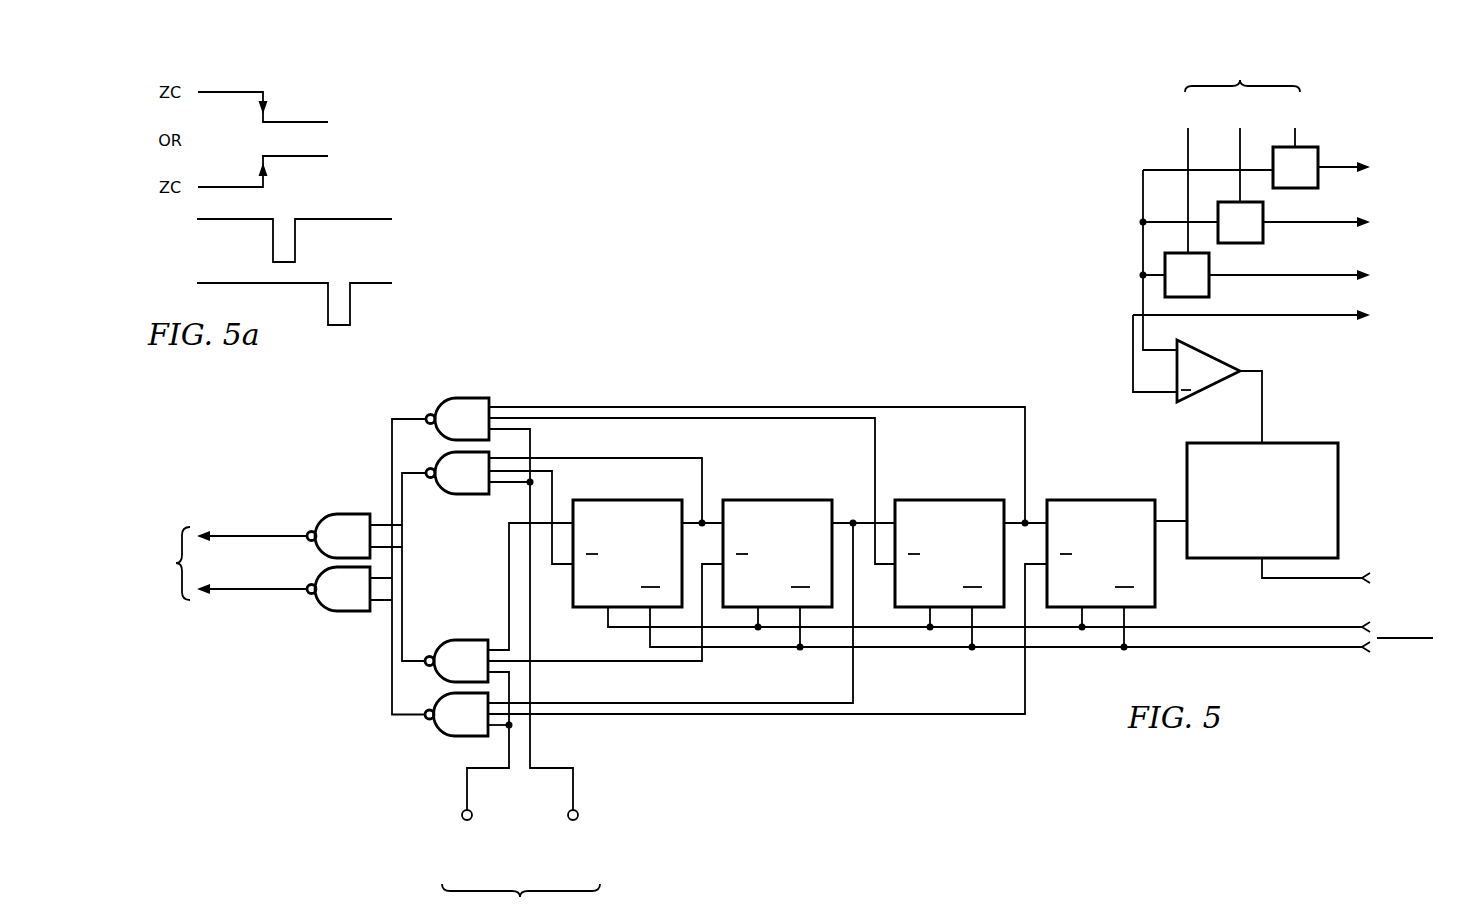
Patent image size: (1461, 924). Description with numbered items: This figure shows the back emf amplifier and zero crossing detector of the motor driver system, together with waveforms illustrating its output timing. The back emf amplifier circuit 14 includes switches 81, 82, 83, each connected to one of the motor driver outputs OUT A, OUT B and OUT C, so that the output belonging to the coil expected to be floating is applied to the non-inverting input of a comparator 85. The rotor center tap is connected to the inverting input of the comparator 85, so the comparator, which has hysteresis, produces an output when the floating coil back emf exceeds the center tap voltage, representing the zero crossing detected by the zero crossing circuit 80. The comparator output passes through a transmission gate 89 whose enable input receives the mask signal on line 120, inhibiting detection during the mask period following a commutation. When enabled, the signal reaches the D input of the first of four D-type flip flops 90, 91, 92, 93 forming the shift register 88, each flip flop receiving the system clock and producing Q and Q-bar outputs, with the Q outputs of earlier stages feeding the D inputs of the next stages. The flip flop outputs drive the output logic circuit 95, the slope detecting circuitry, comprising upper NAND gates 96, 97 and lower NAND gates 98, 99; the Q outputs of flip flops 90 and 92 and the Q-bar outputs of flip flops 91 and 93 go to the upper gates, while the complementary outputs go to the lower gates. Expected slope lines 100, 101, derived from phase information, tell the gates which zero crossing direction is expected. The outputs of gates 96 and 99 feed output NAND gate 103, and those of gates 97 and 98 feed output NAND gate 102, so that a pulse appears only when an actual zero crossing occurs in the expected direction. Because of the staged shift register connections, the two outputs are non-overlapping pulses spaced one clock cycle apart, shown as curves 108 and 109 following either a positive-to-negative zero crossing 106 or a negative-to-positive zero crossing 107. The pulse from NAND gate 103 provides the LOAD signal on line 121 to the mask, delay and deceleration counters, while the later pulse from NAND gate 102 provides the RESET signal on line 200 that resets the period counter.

In FIG. 5, the back emf amplifier circuit 14 is at (1113, 298).
In FIG. 5, the zero crossing circuit 80 is at (886, 208).
In FIG. 5, the switch 81 is at (1319, 178).
In FIG. 5, the switch 82 is at (1264, 233).
In FIG. 5, the switch 83 is at (1210, 288).
In FIG. 5, the comparator 85 is at (1234, 362).
In FIG. 5, the shift register 88 is at (1066, 445).
In FIG. 5, the transmission gate 89 is at (1293, 442).
In FIG. 5, the D-type flip flop 90 is at (1102, 499).
In FIG. 5, the D-type flip flop 91 is at (950, 499).
In FIG. 5, the D-type flip flop 92 is at (780, 499).
In FIG. 5, the D-type flip flop 93 is at (628, 499).
In FIG. 5, the output logic circuit 95 is at (476, 326).
In FIG. 5, the upper NAND gate 96 is at (465, 397).
In FIG. 5, the upper NAND gate 97 is at (465, 495).
In FIG. 5, the lower NAND gate 98 is at (466, 639).
In FIG. 5, the lower NAND gate 99 is at (464, 738).
In FIG. 5, the expected slope line 100 is at (579, 805).
In FIG. 5, the expected slope line 101 is at (461, 805).
In FIG. 5a, the output NAND gate 102 is at (249, 306).
In FIG. 5, the output NAND gate 102 is at (348, 513).
In FIG. 5a, the output NAND gate 103 is at (249, 215).
In FIG. 5, the output NAND gate 103 is at (347, 612).
In FIG. 5a, the positive-to-negative zero crossing 106 is at (294, 120).
In FIG. 5a, the negative-to-positive zero crossing 107 is at (296, 158).
In FIG. 5a, the curve 108 is at (368, 217).
In FIG. 5a, the curve 109 is at (370, 286).
In FIG. 5, the mask counter output line 120 is at (1350, 576).
In FIG. 5, the LOAD signal line 121 is at (226, 595).
In FIG. 5, the reset signal line 200 is at (225, 533).